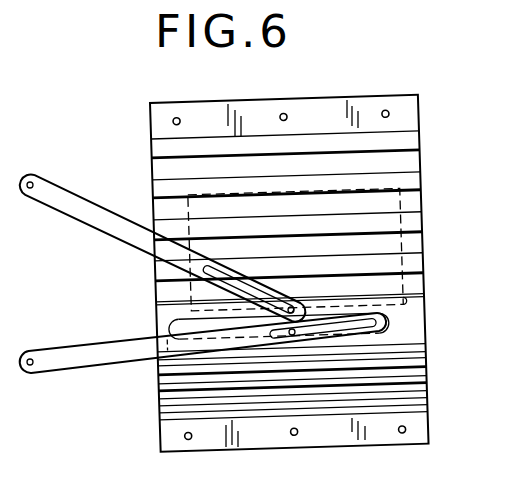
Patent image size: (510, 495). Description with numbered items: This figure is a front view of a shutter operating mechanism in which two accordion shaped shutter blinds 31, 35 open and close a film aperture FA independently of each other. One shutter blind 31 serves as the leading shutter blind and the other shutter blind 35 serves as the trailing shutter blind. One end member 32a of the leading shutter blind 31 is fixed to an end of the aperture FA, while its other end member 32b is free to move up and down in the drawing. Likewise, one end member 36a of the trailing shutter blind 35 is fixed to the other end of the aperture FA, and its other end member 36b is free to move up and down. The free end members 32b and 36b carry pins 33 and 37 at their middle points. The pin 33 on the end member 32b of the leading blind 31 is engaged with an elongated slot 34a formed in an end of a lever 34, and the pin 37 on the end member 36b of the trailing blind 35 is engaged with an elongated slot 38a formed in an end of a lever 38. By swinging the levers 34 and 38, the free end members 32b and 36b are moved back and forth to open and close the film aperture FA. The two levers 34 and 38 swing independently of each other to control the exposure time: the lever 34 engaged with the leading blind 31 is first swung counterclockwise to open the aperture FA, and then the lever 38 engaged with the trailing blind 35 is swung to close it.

The leading shutter blind 31 is at (437, 130).
The end member 32a is at (267, 101).
The end member 32b is at (374, 301).
The pin 33 is at (292, 307).
The lever 34 is at (77, 220).
The elongated slot 34a is at (224, 270).
The trailing shutter blind 35 is at (437, 347).
The end member 36a is at (333, 442).
The end member 36b is at (350, 322).
The pin 37 is at (292, 336).
The lever 38 is at (88, 366).
The elongated slot 38a is at (355, 330).
The film aperture FA is at (182, 196).